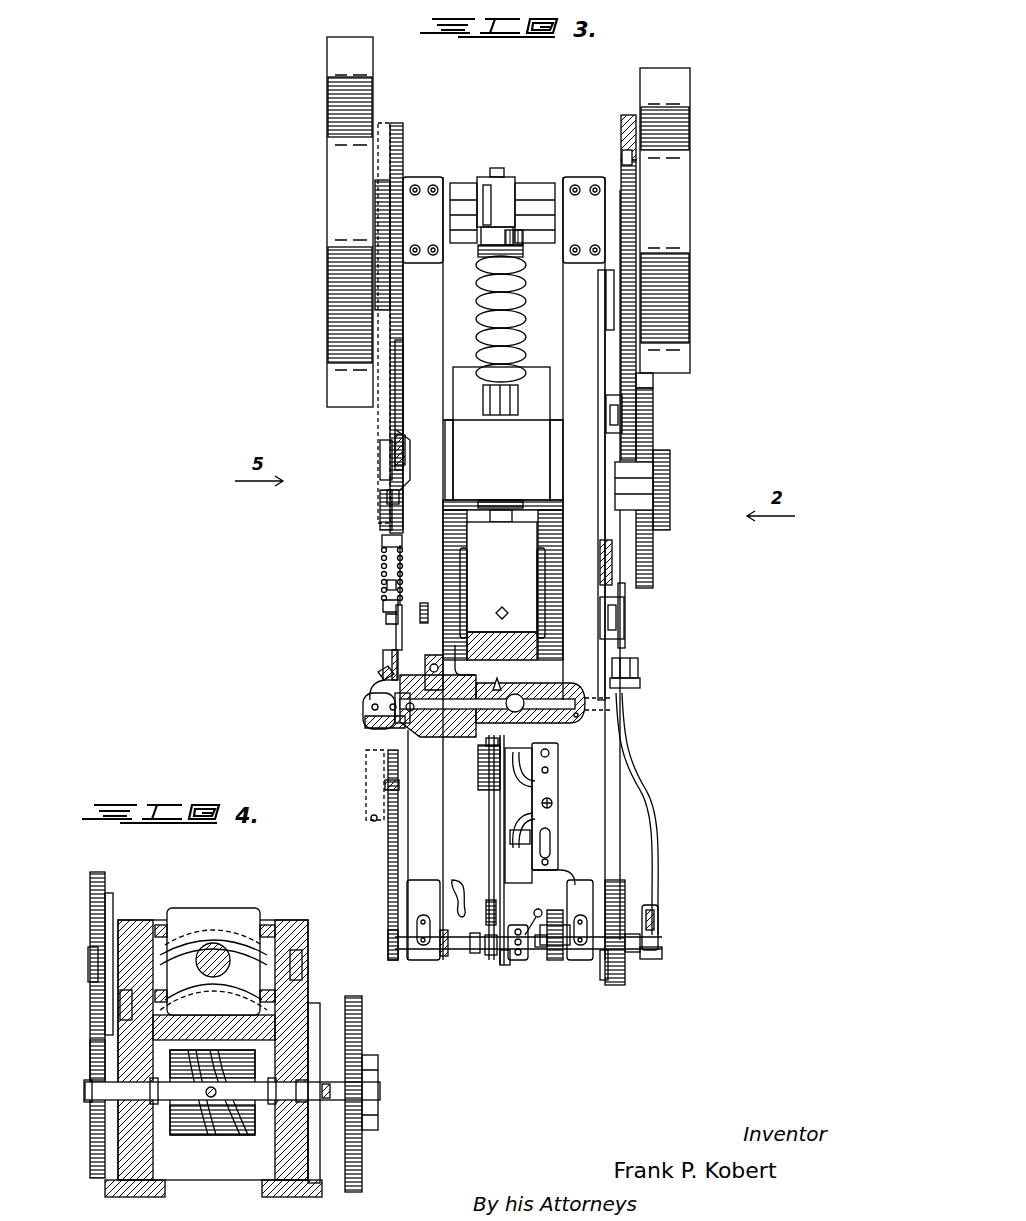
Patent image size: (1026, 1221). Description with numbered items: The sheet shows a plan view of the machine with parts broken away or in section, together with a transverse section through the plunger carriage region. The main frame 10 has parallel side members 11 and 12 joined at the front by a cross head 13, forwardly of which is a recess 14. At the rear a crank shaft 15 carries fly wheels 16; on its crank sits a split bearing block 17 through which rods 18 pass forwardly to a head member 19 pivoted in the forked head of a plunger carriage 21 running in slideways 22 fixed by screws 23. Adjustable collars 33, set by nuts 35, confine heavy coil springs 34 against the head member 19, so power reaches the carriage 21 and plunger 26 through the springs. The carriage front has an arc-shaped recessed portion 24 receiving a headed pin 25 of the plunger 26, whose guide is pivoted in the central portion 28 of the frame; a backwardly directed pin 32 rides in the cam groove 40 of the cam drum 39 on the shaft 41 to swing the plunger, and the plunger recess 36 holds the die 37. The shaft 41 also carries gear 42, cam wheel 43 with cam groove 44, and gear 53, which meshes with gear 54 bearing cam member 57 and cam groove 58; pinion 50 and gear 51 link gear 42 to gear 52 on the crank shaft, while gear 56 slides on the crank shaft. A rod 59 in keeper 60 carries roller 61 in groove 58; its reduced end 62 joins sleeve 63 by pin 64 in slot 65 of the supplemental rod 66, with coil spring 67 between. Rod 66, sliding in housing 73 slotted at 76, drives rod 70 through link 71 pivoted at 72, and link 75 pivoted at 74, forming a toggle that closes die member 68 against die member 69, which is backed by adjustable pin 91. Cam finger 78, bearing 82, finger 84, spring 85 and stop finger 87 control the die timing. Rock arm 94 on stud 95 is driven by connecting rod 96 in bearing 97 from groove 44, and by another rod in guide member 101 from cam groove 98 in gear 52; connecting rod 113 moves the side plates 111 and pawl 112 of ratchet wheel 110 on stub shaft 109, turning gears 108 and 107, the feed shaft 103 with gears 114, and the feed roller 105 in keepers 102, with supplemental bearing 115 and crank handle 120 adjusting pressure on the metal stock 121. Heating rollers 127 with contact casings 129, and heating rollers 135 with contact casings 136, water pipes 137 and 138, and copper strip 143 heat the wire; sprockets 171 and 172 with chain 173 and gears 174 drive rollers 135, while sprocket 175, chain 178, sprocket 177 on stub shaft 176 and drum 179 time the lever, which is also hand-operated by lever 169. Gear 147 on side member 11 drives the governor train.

In FIG. 3, the main frame 10 is at (610, 776).
In FIG. 4, the main frame 10 is at (308, 938).
In FIG. 3, the side member 11 is at (423, 353).
In FIG. 4, the side member 11 is at (128, 922).
In FIG. 3, the side member 12 is at (584, 247).
In FIG. 4, the side member 12 is at (290, 920).
In FIG. 3, the cross head 13 is at (548, 697).
In FIG. 3, the recess 14 is at (553, 803).
In FIG. 3, the crank shaft 15 is at (540, 185).
In FIG. 3, the fly wheel 16 is at (508, 222).
In FIG. 3, the split bearing block 17 is at (503, 178).
In FIG. 3, the rod 18 is at (487, 212).
In FIG. 3, the head member 19 is at (490, 400).
In FIG. 3, the plunger carriage 21 is at (503, 433).
In FIG. 4, the plunger carriage 21 is at (210, 908).
In FIG. 3, the slideway 22 is at (555, 460).
In FIG. 4, the slideway 22 is at (158, 922).
In FIG. 4, the screw 23 is at (298, 975).
In FIG. 4, the arc-shaped recessed portion 24 is at (172, 958).
In FIG. 3, the headed pin 25 is at (497, 502).
In FIG. 4, the headed pin 25 is at (216, 945).
In FIG. 3, the plunger 26 is at (503, 585).
In FIG. 3, the central portion of main frame 28 is at (548, 570).
In FIG. 4, the pin 32 is at (206, 1091).
In FIG. 3, the adjustable collar 33 is at (480, 255).
In FIG. 3, the coil spring 34 is at (478, 325).
In FIG. 3, the nut 35 is at (522, 252).
In FIG. 3, the recess 36 is at (522, 640).
In FIG. 3, the die 37 is at (492, 640).
In FIG. 4, the cam drum 39 is at (212, 1092).
In FIG. 4, the cam groove 40 is at (214, 1136).
In FIG. 4, the shaft 41 is at (266, 1100).
In FIG. 3, the gear 42 is at (660, 487).
In FIG. 4, the gear 42 is at (362, 1015).
In FIG. 3, the cam wheel 43 is at (600, 508).
In FIG. 4, the cam wheel 43 is at (362, 1150).
In FIG. 3, the cam groove 44 is at (601, 560).
In FIG. 3, the pinion 50 is at (652, 386).
In FIG. 3, the gear 51 is at (652, 410).
In FIG. 3, the gear 52 is at (628, 115).
In FIG. 3, the gear 53 is at (383, 518).
In FIG. 4, the gear 53 is at (92, 1060).
In FIG. 3, the gear 54 is at (402, 356).
In FIG. 4, the gear 54 is at (90, 884).
In FIG. 3, the gear 56 is at (386, 125).
In FIG. 3, the cam member 57 is at (398, 410).
In FIG. 4, the cam member 57 is at (112, 894).
In FIG. 3, the cam groove 58 is at (405, 448).
In FIG. 3, the rod 59 is at (405, 484).
In FIG. 3, the keeper 60 is at (387, 497).
In FIG. 3, the roller 61 is at (383, 462).
In FIG. 3, the reduced front end 62 is at (382, 541).
In FIG. 3, the sleeve 63 is at (385, 604).
In FIG. 3, the pin 64 is at (402, 573).
In FIG. 3, the elongated slot 65 is at (382, 580).
In FIG. 3, the supplemental rod 66 is at (385, 620).
In FIG. 3, the coil spring 67 is at (383, 596).
In FIG. 3, the die member 68 is at (496, 695).
In FIG. 3, the die member 69 is at (517, 695).
In FIG. 3, the rod 70 is at (432, 732).
In FIG. 3, the link 71 is at (406, 720).
In FIG. 3, the pivot 72 is at (400, 720).
In FIG. 3, the housing 73 is at (372, 696).
In FIG. 3, the pivot 74 is at (366, 712).
In FIG. 3, the link 75 is at (366, 722).
In FIG. 3, the slot 76 is at (390, 652).
In FIG. 3, the cam finger 78 is at (397, 645).
In FIG. 3, the bearing 82 is at (442, 673).
In FIG. 3, the finger 84 is at (392, 662).
In FIG. 3, the spring 85 is at (380, 678).
In FIG. 3, the stop finger 87 is at (455, 645).
In FIG. 3, the pin 91 is at (576, 713).
In FIG. 3, the rock arm 94 is at (638, 668).
In FIG. 3, the stud 95 is at (612, 312).
In FIG. 3, the connecting rod 96 is at (625, 645).
In FIG. 4, the connecting rod 96 is at (330, 1090).
In FIG. 3, the bearing 97 is at (615, 617).
In FIG. 3, the cam groove 98 is at (622, 155).
In FIG. 3, the guide member 101 is at (615, 412).
In FIG. 3, the keeper 102 is at (425, 962).
In FIG. 3, the shaft 103 is at (543, 948).
In FIG. 3, the feed roller 105 is at (500, 952).
In FIG. 3, the gear 107 is at (615, 965).
In FIG. 3, the gear 108 is at (615, 980).
In FIG. 3, the stub shaft 109 is at (630, 930).
In FIG. 3, the ratchet wheel 110 is at (653, 960).
In FIG. 3, the side plate 111 is at (650, 906).
In FIG. 3, the pawl 112 is at (655, 920).
In FIG. 3, the connecting rod 113 is at (628, 738).
In FIG. 3, the gear 114 is at (557, 912).
In FIG. 3, the supplemental bearing 115 is at (533, 912).
In FIG. 3, the crank handle 120 is at (514, 956).
In FIG. 3, the metal stock 121 is at (506, 966).
In FIG. 3, the heating roller 127 is at (502, 930).
In FIG. 3, the contact casing 129 is at (532, 836).
In FIG. 3, the heating roller 135 is at (488, 745).
In FIG. 3, the contact casing 136 is at (543, 754).
In FIG. 3, the water supply pipe 137 is at (540, 786).
In FIG. 3, the flexible pipe 138 is at (512, 815).
In FIG. 3, the flexible copper strip 143 is at (503, 748).
In FIG. 3, the gear 147 is at (372, 272).
In FIG. 3, the hand-operated lever 169 is at (452, 900).
In FIG. 3, the sprocket wheel 171 is at (486, 946).
In FIG. 3, the sprocket wheel 172 is at (488, 776).
In FIG. 3, the chain 173 is at (480, 922).
In FIG. 3, the gear 174 is at (490, 798).
In FIG. 3, the sprocket wheel 175 is at (389, 946).
In FIG. 3, the stub shaft 176 is at (398, 788).
In FIG. 3, the sprocket wheel 177 is at (385, 762).
In FIG. 3, the chain 178 is at (388, 855).
In FIG. 3, the drum 179 is at (372, 819).